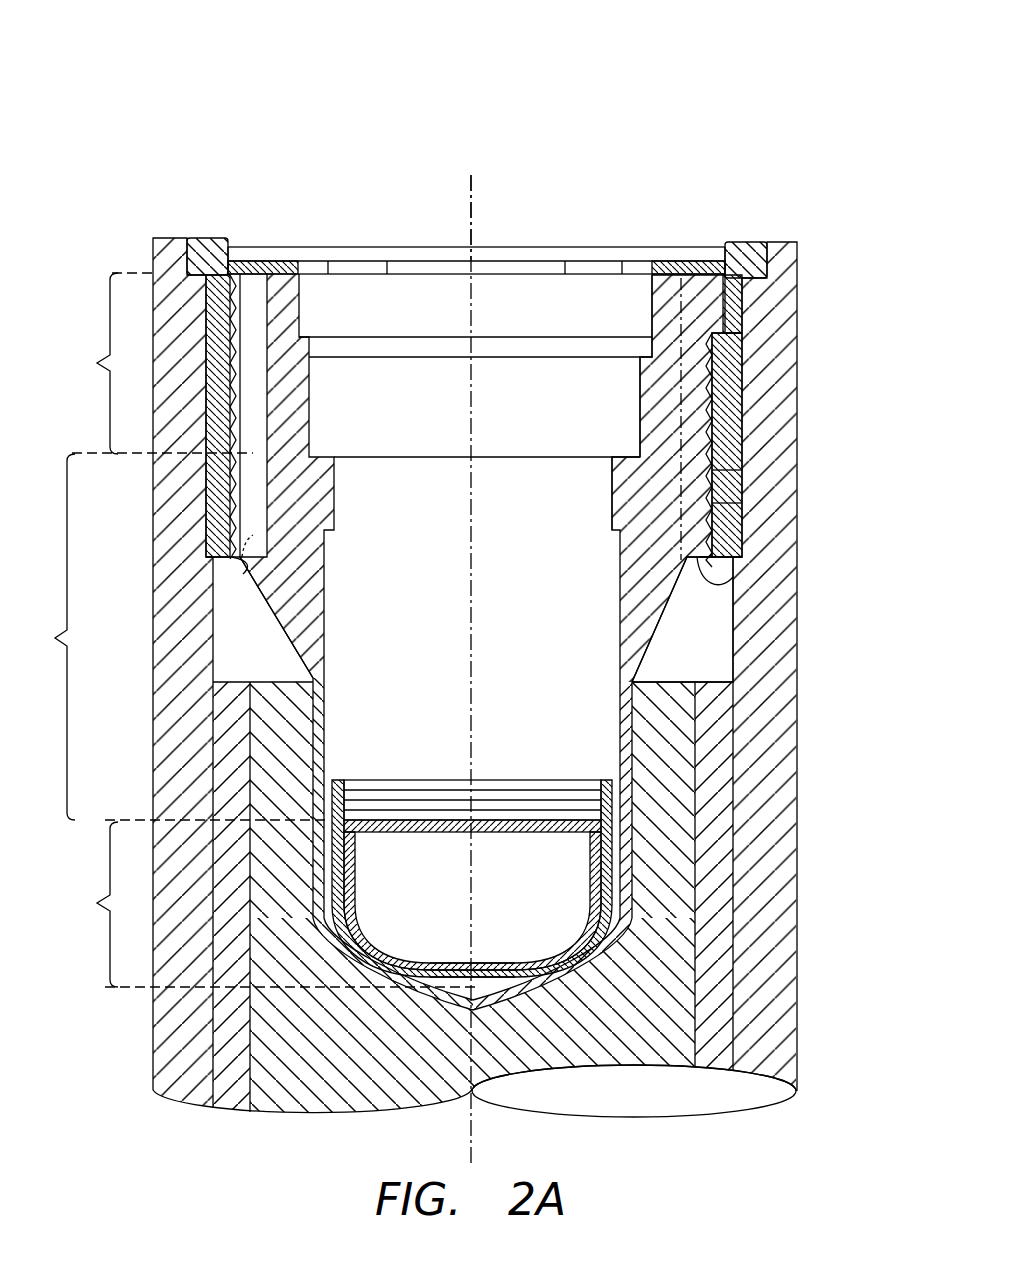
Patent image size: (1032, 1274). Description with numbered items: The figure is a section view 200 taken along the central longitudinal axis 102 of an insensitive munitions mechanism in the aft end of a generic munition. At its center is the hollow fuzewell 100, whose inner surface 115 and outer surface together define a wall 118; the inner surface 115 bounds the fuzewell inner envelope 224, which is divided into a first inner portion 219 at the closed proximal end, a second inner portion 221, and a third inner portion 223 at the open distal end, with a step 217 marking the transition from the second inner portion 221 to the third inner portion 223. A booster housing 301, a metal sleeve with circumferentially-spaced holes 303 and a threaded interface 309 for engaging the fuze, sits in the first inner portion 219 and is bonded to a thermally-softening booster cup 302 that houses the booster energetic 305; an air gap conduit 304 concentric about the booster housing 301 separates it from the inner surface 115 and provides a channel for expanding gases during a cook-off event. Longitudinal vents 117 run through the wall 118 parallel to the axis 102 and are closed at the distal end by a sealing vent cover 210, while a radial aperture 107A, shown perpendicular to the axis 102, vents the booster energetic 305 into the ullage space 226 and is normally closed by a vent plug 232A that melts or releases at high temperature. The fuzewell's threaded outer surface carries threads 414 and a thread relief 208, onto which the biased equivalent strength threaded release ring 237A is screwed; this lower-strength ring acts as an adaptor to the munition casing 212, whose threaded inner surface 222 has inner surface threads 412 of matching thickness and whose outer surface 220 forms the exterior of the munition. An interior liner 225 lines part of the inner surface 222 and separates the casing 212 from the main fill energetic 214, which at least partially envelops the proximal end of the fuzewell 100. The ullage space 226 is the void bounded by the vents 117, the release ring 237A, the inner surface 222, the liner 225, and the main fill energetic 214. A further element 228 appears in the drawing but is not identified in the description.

The section view 200 is at (137, 197).
The retaining ring 228 is at (203, 238).
The sealing vent cover 210 is at (280, 260).
The central longitudinal axis 102 is at (470, 211).
The fuzewell 100 is at (641, 307).
The fuzewell inner envelope 224 is at (426, 310).
The thread relief 208 is at (742, 340).
The BEST release ring 237A is at (743, 381).
The wall 118 is at (640, 400).
The step 217 is at (630, 456).
The plurality of threads 414 is at (738, 482).
The inner surface threads 412 is at (735, 492).
The plurality of longitudinal vents 117 is at (243, 573).
The radial aperture 107A is at (317, 608).
The vent plug 232A is at (327, 623).
The ullage space 226 is at (695, 628).
The inner surface 115 is at (632, 682).
The threaded interface 309 is at (393, 800).
The thermally-softening booster cup 302 is at (523, 786).
The booster housing 301 is at (355, 838).
The circumferentially-spaced holes 303 is at (357, 870).
The booster energetic 305 is at (454, 939).
The air gap conduit 304 is at (517, 976).
The interior liner 225 is at (723, 787).
The outer surface 220 is at (797, 864).
The main fill energetic 214 is at (697, 943).
The inner surface 222 is at (716, 995).
The munition casing 212 is at (757, 1018).
The third inner portion 223 is at (151, 363).
The second inner portion 221 is at (170, 637).
The first inner portion 219 is at (260, 904).